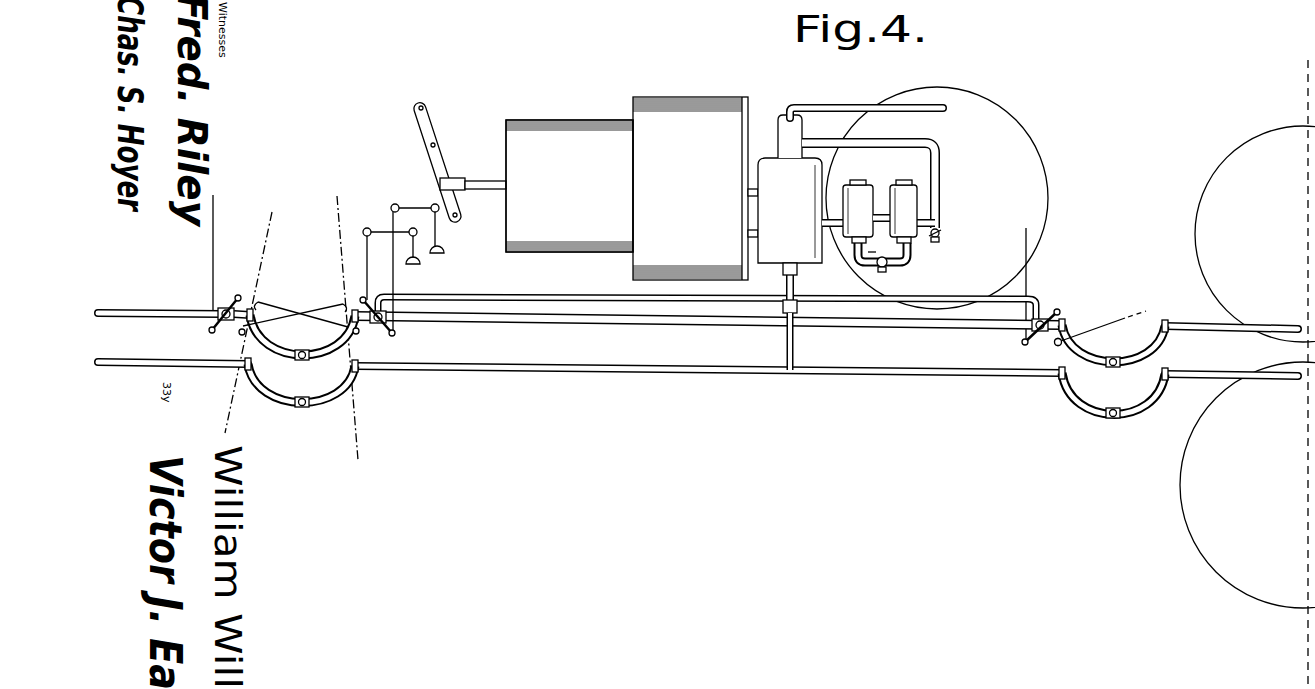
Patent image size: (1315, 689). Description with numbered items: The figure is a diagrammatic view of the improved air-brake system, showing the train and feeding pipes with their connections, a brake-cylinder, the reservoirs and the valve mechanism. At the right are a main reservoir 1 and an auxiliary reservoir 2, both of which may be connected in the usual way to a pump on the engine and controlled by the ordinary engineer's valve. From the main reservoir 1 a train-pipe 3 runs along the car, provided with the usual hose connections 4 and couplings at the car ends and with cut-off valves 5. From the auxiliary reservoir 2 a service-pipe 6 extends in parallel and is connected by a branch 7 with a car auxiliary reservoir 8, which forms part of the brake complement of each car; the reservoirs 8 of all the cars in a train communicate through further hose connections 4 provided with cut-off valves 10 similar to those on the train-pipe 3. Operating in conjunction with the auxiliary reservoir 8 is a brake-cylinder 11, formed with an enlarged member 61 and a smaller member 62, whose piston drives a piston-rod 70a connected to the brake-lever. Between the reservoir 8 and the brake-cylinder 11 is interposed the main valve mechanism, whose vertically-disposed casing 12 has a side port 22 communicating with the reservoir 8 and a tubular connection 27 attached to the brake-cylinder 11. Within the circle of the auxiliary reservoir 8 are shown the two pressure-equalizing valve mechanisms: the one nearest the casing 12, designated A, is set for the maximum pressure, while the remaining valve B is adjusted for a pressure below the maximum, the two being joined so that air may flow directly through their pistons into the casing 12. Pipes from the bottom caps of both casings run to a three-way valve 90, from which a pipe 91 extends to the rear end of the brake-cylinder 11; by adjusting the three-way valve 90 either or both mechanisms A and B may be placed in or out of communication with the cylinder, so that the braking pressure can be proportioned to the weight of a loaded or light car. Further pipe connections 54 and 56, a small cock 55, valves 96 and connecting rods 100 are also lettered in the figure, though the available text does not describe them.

The main reservoir 1 is at (1247, 485).
The auxiliary reservoir 2 is at (1255, 234).
The train-pipe 3 is at (698, 383).
The hose connections 4 is at (301, 350).
The cut-off valves 5 is at (254, 363).
The train pipe 6 is at (698, 334).
The branch 7 is at (710, 308).
The auxiliary reservoir 8 is at (1036, 163).
The cut-off valves 10 is at (250, 305).
The brake-cylinder 11 is at (582, 120).
The casing 12 is at (812, 262).
The port 22 is at (798, 307).
The tubular connection 27 is at (748, 192).
The pipe 54 is at (890, 139).
The valve 55 is at (940, 248).
The pipe 56 is at (862, 104).
The enlarged member 61 is at (735, 97).
The smaller member 62 is at (527, 120).
The piston-rod 70a is at (478, 180).
The three-way valve 90 is at (891, 272).
The pipe 91 is at (922, 274).
The cock 96 is at (384, 333).
The rod 100 is at (312, 312).
The maximum valve mechanism A is at (847, 200).
The valve mechanism B is at (895, 200).